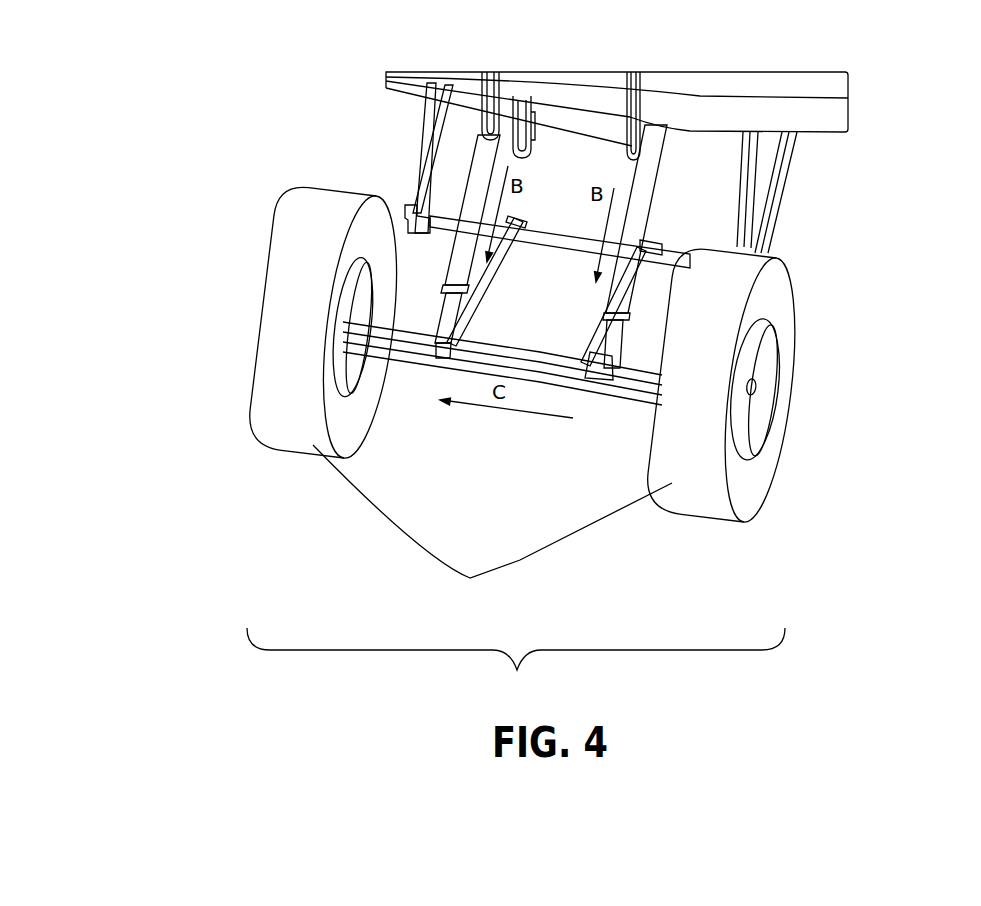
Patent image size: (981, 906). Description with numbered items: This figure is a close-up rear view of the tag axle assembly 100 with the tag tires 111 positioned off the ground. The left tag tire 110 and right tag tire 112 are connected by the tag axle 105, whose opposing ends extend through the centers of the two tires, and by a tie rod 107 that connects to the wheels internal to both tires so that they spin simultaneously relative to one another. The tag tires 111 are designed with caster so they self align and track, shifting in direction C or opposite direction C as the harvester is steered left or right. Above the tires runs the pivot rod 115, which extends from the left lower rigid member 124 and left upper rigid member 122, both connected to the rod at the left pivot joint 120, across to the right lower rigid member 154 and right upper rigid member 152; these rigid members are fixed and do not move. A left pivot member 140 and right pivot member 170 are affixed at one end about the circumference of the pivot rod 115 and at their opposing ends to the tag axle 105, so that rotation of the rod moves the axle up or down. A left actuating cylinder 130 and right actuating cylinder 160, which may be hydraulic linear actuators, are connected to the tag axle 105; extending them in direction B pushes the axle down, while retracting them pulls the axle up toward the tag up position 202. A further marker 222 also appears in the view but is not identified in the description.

The tag axle assembly 100 is at (516, 666).
The tag axle 105 is at (630, 370).
The tie rod 107 is at (407, 232).
The left tag tire 110 is at (262, 377).
The tag tires 111 is at (470, 579).
The right tag tire 112 is at (770, 437).
The pivot rod 115 is at (700, 240).
The left pivot joint 120 is at (400, 203).
The left upper rigid member 122 is at (428, 150).
The left lower rigid member 124 is at (447, 102).
The left actuating cylinder 130 is at (458, 270).
The left pivot member 140 is at (456, 304).
The right upper rigid member 152 is at (743, 163).
The right lower rigid member 154 is at (775, 190).
The right actuating cylinder 160 is at (623, 276).
The right pivot member 170 is at (593, 352).
The tag up position 202 is at (837, 528).
The first direction 222 is at (233, 497).